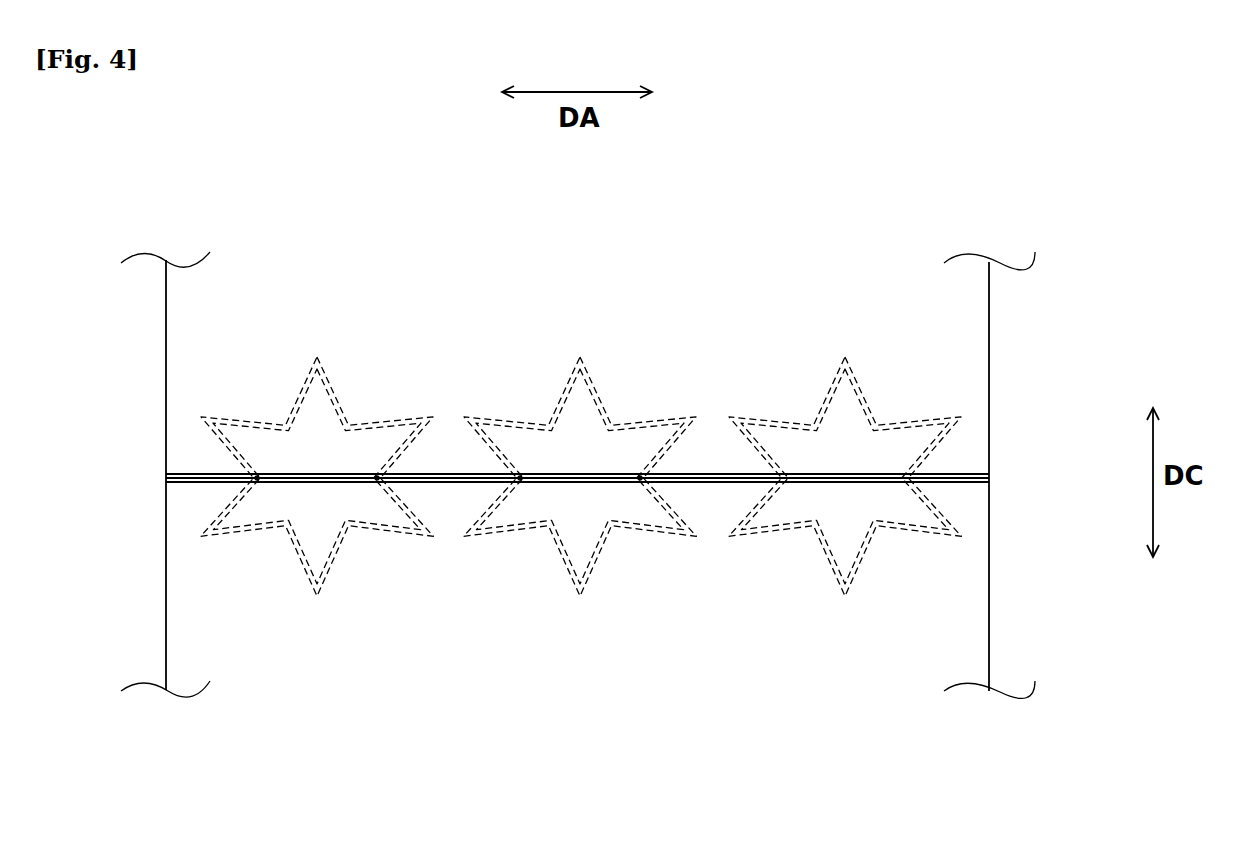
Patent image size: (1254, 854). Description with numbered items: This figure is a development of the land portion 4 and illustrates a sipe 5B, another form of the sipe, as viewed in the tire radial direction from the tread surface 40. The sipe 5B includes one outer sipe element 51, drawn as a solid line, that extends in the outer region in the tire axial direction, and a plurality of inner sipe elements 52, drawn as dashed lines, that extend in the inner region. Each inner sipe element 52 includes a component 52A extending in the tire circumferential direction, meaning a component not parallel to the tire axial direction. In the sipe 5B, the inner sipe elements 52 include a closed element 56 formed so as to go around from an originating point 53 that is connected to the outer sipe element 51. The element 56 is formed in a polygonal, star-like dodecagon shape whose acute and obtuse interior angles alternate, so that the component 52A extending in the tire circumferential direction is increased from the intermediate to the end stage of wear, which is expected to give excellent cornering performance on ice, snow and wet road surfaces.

The land portion 4 is at (945, 372).
The tread surface 40 is at (733, 618).
The sipe 5B is at (713, 474).
The outer sipe element 51 is at (456, 483).
The inner sipe element 52 is at (343, 390).
The component extending in the tire circumferential direction 52A is at (830, 398).
The originating point 53 is at (257, 480).
The closed element 56 is at (597, 400).